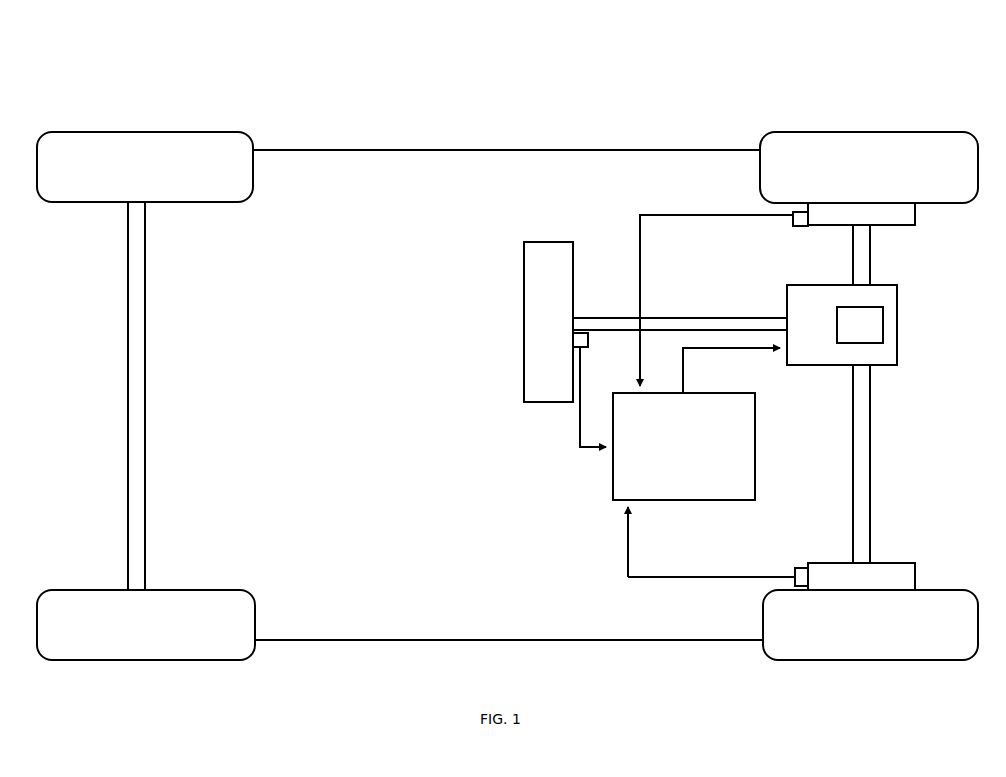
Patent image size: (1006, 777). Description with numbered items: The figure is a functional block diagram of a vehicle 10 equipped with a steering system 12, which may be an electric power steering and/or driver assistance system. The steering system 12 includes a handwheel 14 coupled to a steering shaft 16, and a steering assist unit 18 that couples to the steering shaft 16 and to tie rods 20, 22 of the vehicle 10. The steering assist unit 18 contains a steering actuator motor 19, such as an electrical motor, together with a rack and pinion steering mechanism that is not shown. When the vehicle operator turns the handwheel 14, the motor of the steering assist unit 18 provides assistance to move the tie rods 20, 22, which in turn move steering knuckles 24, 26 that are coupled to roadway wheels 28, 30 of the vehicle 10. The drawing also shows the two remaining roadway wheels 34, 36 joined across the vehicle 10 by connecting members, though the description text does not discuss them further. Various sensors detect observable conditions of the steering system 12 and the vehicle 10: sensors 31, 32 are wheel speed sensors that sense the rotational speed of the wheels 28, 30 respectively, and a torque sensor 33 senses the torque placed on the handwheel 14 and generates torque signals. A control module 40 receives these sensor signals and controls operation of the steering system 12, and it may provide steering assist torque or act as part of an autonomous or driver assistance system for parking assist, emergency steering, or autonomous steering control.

The vehicle 10 is at (547, 58).
The steering system 12 is at (650, 198).
The handwheel 14 is at (545, 242).
The steering shaft 16 is at (650, 318).
The steering assist unit 18 is at (899, 320).
The steering actuator motor 19 is at (880, 335).
The tie rod 20 is at (872, 265).
The tie rod 22 is at (872, 432).
The steering knuckle 24 is at (915, 205).
The steering knuckle 26 is at (837, 563).
The roadway wheel 28 is at (905, 132).
The roadway wheel 30 is at (920, 590).
The wheel speed sensor 31 is at (797, 227).
The wheel speed sensor 32 is at (800, 568).
The torque sensor 33 is at (586, 348).
The front left wheel 34 is at (210, 132).
The rear left wheel 36 is at (205, 590).
The control module 40 is at (705, 393).